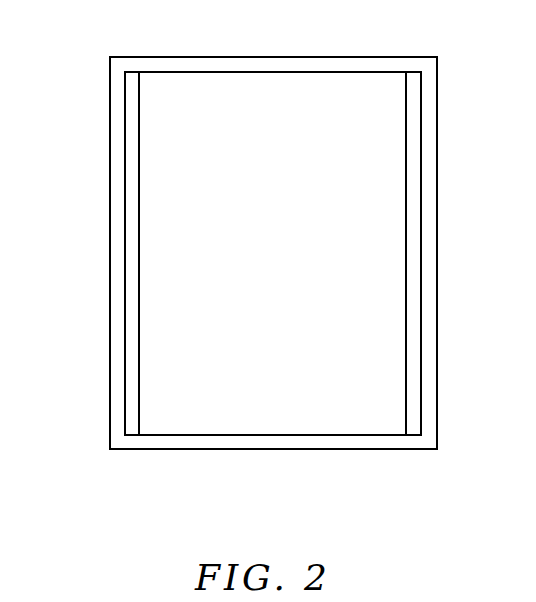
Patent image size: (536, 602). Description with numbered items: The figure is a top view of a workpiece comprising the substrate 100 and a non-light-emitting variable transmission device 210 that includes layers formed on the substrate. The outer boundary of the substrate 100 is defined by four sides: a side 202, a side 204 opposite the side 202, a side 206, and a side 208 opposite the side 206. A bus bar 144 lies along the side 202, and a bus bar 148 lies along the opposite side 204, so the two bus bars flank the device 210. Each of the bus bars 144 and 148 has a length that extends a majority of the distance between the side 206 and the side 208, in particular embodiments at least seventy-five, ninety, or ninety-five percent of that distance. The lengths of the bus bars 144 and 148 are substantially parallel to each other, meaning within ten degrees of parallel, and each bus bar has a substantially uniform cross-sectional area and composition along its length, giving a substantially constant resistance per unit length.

The substrate 100 is at (428, 245).
The bus bar 144 is at (118, 318).
The bus bar 148 is at (413, 200).
The side 202 is at (109, 120).
The side 204 is at (437, 113).
The side 206 is at (247, 57).
The side 208 is at (287, 449).
The non-light-emitting variable transmission device 210 is at (292, 264).